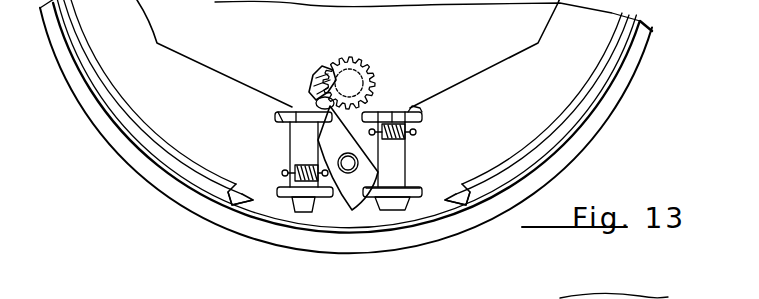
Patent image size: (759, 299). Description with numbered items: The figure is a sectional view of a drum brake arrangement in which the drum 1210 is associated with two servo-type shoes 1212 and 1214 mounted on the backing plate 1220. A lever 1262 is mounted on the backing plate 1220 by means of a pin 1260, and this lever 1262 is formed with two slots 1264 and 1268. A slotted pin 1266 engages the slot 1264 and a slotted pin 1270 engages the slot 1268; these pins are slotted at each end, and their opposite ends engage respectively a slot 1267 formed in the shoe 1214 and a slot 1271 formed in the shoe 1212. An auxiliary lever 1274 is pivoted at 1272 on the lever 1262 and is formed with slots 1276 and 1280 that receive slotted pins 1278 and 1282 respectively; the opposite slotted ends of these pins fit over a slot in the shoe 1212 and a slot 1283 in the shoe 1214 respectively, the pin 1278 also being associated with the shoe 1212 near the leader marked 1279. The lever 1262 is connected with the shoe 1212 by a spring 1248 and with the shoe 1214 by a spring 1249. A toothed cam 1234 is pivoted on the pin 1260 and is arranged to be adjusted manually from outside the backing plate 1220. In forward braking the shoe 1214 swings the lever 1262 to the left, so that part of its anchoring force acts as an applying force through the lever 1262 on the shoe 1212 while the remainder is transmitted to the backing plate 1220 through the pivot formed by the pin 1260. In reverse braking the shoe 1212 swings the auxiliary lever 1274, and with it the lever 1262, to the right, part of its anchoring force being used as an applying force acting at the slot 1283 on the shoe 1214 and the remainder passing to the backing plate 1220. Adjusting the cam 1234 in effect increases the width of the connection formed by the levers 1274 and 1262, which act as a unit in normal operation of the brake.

The drum 1210 is at (637, 47).
The shoe 1212 is at (127, 95).
The shoe 1214 is at (578, 75).
The backing plate 1220 is at (348, 54).
The toothed cam 1234 is at (338, 62).
The spring 1248 is at (305, 165).
The spring 1249 is at (410, 137).
The pin 1260 is at (352, 82).
The lever 1262 is at (377, 115).
The slot 1264 is at (393, 115).
The slotted pin 1266 is at (405, 115).
The slot 1267 is at (415, 107).
The slot 1268 is at (323, 210).
The slotted pin 1270 is at (302, 197).
The slot 1271 is at (258, 208).
The pivot 1272 is at (360, 163).
The auxiliary lever 1274 is at (350, 192).
The slot 1276 is at (322, 117).
The slotted pin 1278 is at (300, 114).
The post 1279 is at (290, 110).
The slot 1280 is at (367, 208).
The slotted pin 1282 is at (397, 195).
The slot 1283 is at (407, 205).